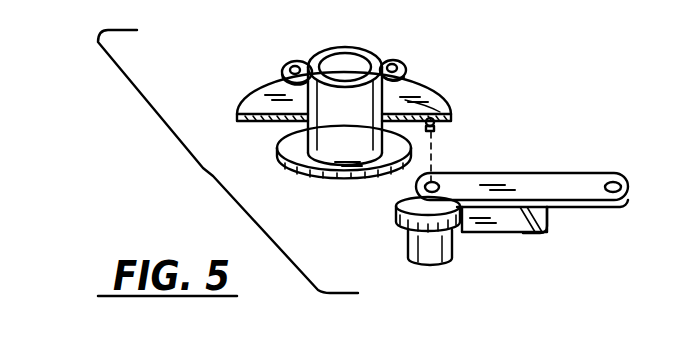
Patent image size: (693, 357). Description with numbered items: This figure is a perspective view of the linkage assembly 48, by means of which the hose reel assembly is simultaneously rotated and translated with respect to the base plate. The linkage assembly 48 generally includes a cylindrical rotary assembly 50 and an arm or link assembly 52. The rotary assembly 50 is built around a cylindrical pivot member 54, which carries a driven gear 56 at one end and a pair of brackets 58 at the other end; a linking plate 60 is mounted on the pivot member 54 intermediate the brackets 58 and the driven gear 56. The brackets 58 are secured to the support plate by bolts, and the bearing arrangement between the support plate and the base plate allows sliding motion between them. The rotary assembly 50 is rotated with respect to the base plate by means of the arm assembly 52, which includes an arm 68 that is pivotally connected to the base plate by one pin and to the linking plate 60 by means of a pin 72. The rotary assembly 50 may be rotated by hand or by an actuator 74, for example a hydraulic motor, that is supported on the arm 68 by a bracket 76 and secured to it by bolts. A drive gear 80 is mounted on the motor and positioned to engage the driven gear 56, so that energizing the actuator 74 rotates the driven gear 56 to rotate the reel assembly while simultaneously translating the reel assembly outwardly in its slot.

The linkage assembly 48 is at (205, 168).
The cylindrical rotary assembly 50 is at (254, 79).
The arm or link assembly 52 is at (546, 239).
The cylindrical pivot member 54 is at (330, 130).
The driven gear 56 is at (343, 179).
The brackets 58 is at (298, 58).
The linking plate 60 is at (422, 103).
The arm 68 is at (578, 183).
The pin 72 is at (440, 128).
The actuator 74 is at (436, 256).
The bracket 76 is at (508, 236).
The drive gear 80 is at (397, 226).